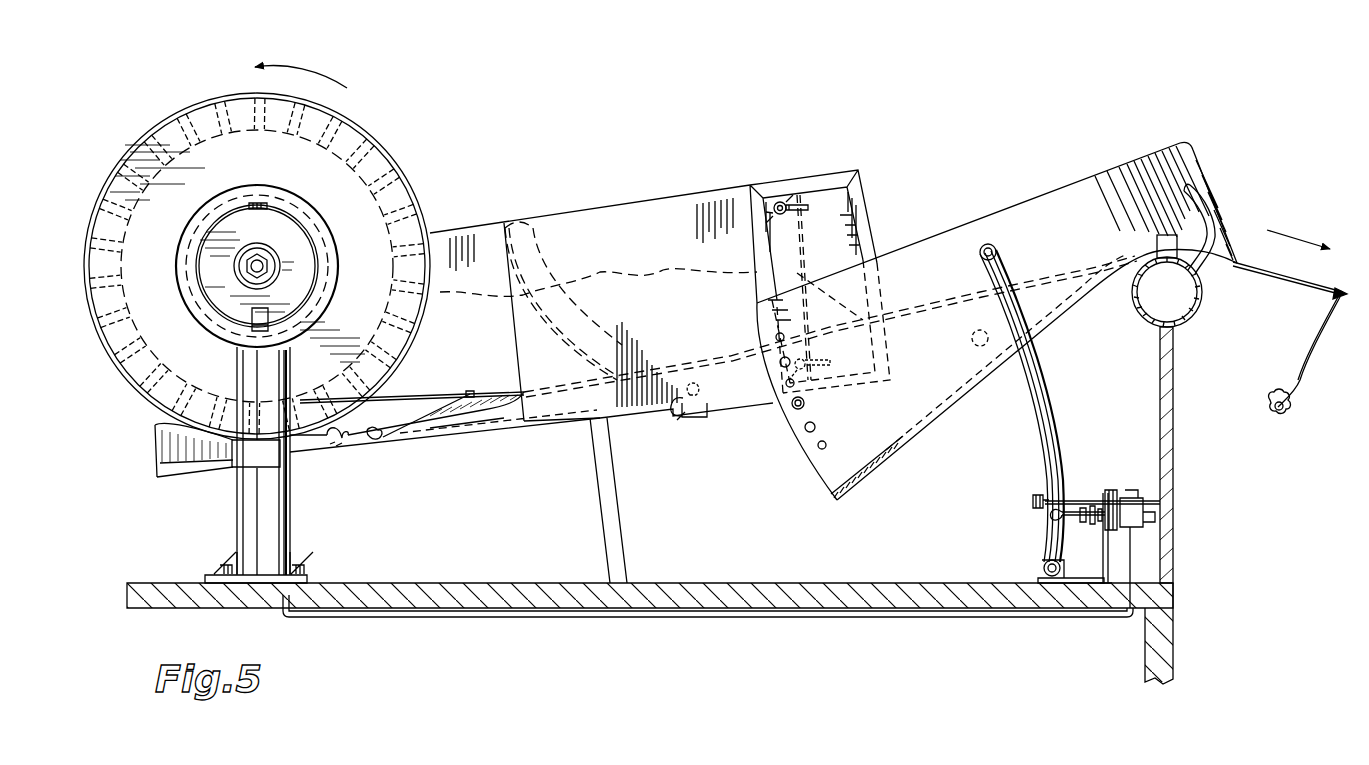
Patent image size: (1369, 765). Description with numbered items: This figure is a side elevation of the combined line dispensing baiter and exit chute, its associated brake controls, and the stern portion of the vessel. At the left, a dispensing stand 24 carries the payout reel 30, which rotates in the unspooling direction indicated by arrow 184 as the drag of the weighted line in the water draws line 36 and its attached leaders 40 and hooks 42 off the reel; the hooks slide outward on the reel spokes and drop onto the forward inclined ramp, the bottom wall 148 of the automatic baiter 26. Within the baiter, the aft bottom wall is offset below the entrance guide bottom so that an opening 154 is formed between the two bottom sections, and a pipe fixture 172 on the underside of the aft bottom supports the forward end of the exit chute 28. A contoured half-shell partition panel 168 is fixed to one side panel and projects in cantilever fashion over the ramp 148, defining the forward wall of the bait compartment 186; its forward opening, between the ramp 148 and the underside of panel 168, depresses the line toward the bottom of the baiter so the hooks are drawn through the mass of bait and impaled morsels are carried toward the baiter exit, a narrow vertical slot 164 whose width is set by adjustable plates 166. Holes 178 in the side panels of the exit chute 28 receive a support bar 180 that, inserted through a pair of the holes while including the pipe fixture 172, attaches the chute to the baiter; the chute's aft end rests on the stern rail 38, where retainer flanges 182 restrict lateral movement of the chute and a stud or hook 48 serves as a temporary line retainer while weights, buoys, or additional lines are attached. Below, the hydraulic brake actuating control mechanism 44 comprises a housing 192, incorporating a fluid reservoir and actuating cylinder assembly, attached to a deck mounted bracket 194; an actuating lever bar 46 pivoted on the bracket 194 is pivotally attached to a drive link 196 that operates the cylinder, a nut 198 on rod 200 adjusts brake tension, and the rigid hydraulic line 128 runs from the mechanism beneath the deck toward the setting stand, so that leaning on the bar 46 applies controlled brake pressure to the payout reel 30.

The dispensing stand 24 is at (212, 82).
The arrow 184 is at (312, 72).
The payout reel 30 is at (425, 187).
The automatic baiter 26 is at (668, 168).
The bait compartment 186 is at (653, 280).
The narrow vertical slot 164 is at (800, 190).
The adjustable plates 166 is at (845, 220).
The exit chute 28 is at (1022, 120).
The retainer flanges 182 is at (1163, 235).
The stud or hook 48 is at (1205, 205).
The line 36 is at (483, 392).
The stern rail 38 is at (1202, 292).
The leaders 40 is at (440, 395).
The hooks 42 is at (380, 442).
The hydraulic brake actuating control mechanism 44 is at (1103, 455).
The housing 192 is at (975, 345).
The actuating lever bar 46 is at (1040, 410).
The rod 200 is at (1070, 498).
The nut 198 is at (1040, 492).
The drive link 196 is at (1065, 528).
The deck mounted bracket 194 is at (1115, 555).
The rigid hydraulic line 128 is at (1062, 618).
The half-shell partition panel 168 is at (515, 296).
The bottom wall 148 is at (345, 448).
The opening 154 is at (692, 425).
The pipe fixture 172 is at (790, 422).
The holes 178 is at (808, 432).
The support bar 180 is at (806, 405).